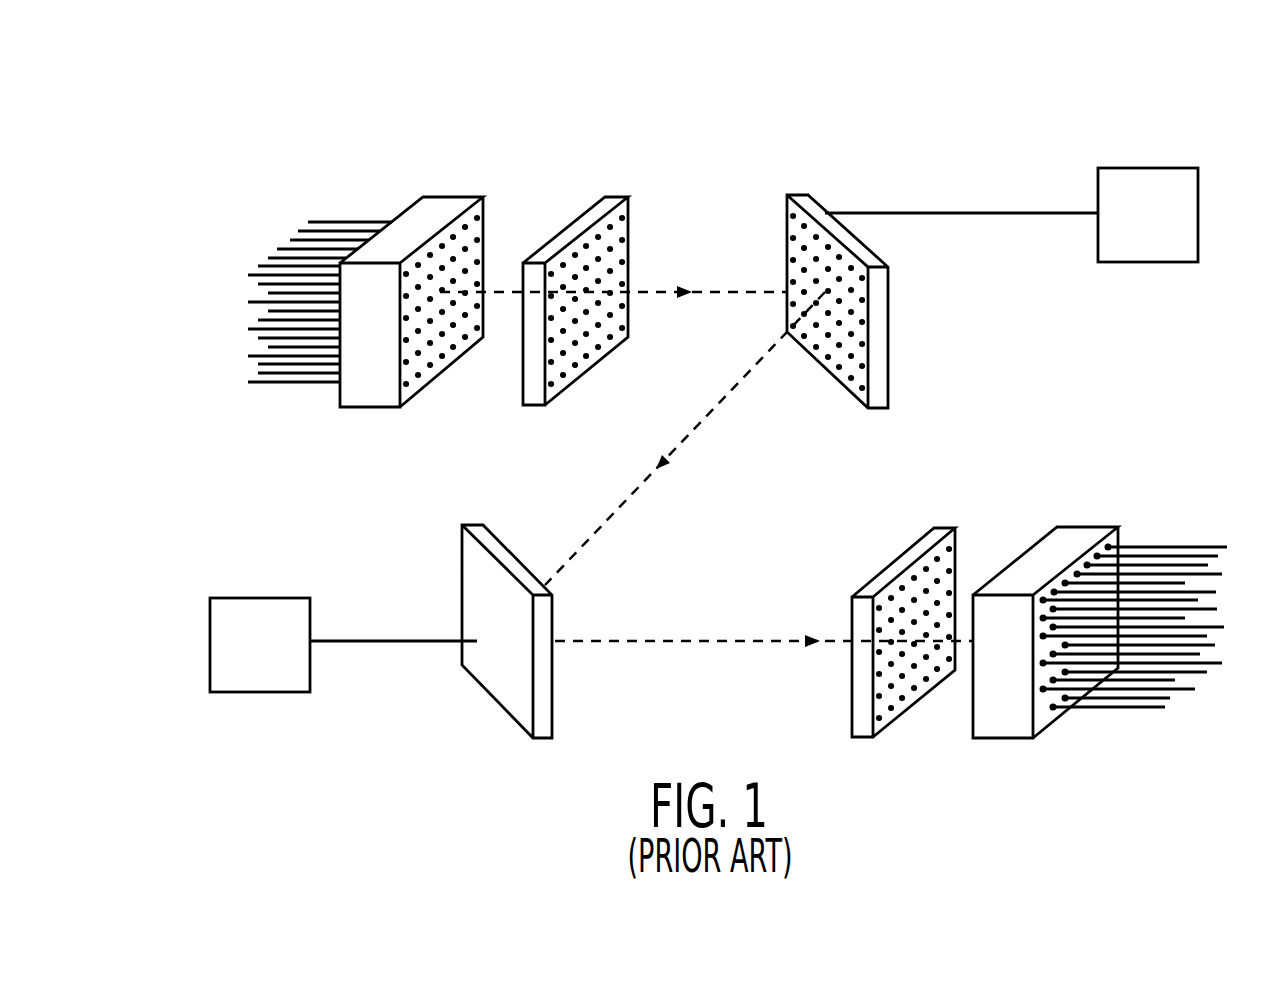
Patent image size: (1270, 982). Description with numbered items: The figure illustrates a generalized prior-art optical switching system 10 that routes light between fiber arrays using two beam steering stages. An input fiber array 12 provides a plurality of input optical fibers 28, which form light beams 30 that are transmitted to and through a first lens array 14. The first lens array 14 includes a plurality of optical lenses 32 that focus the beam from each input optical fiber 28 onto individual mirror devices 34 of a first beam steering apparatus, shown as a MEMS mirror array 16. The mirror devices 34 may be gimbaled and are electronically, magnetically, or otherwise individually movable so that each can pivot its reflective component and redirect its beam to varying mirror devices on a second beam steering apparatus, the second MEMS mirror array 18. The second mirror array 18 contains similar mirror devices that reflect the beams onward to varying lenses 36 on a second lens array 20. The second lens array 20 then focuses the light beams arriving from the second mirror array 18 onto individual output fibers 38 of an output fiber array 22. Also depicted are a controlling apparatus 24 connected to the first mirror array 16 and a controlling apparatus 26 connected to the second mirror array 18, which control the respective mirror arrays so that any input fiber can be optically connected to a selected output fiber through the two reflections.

The optical switching system 10 is at (1003, 163).
The input fiber array 12 is at (447, 197).
The first lens array 14 is at (600, 263).
The first beam steering apparatus 16 is at (828, 289).
The second beam steering apparatus 18 is at (462, 525).
The second lens array 20 is at (916, 591).
The output fiber array 22 is at (1080, 527).
The apparatus for controlling the mirror array 24 is at (1150, 168).
The apparatus for controlling the mirror array 26 is at (260, 598).
The input optical fibers 28 is at (322, 222).
The light beams 30 is at (660, 290).
The optical lenses 32 is at (615, 240).
The mirror devices 34 is at (795, 215).
The lenses 36 is at (925, 565).
The output fibers 38 is at (1150, 547).